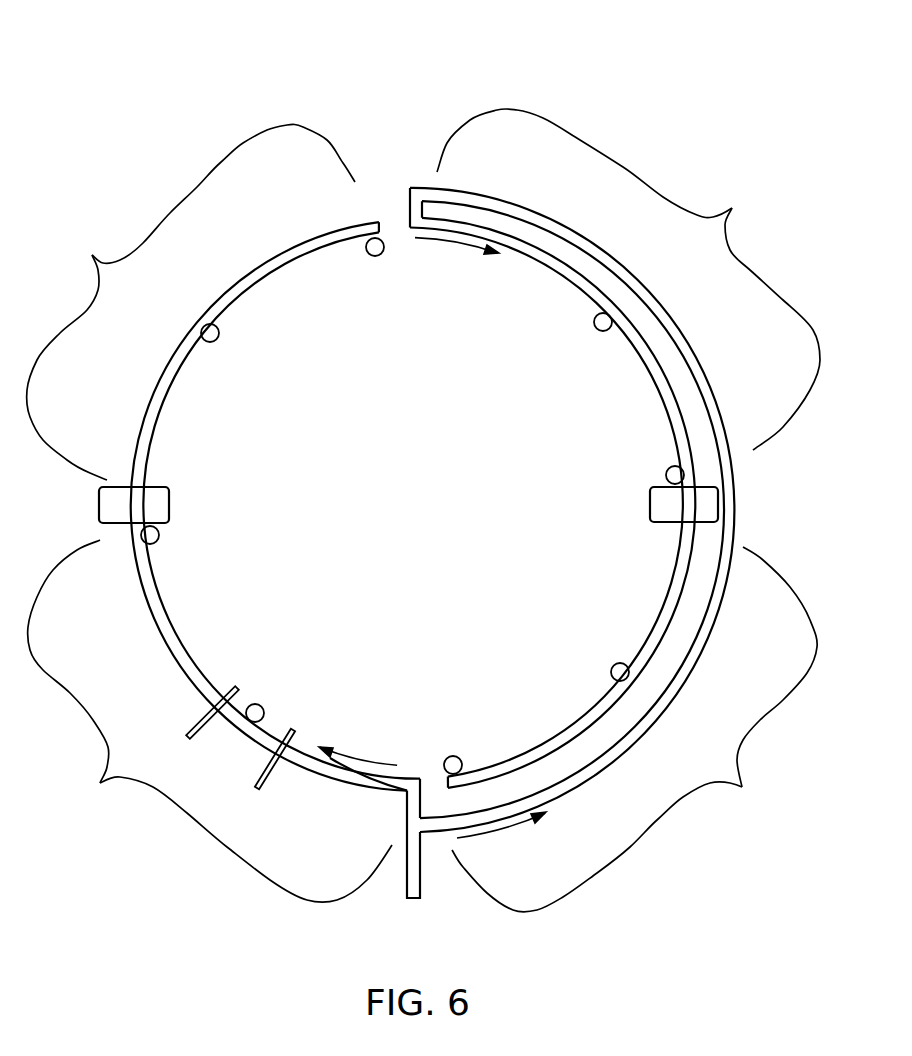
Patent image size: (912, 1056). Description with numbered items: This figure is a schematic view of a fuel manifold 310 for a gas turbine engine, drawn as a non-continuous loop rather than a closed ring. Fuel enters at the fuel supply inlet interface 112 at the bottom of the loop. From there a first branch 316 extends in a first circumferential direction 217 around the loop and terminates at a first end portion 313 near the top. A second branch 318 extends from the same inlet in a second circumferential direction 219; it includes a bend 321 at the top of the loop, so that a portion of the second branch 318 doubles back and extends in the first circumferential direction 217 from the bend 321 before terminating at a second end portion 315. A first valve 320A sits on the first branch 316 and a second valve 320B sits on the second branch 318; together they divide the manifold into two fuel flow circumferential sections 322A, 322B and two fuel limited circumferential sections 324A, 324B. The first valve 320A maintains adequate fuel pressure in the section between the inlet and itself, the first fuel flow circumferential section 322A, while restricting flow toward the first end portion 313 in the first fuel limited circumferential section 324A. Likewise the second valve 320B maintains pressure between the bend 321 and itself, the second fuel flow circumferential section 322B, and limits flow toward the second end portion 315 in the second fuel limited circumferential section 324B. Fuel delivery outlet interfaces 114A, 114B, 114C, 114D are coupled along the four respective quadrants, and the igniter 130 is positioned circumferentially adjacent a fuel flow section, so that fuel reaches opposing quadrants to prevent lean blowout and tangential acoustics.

The fuel manifold 310 is at (116, 108).
The first end portion 313 is at (377, 221).
The first branch 316 is at (377, 790).
The fuel supply inlet interface 112 is at (414, 863).
The bend 321 is at (401, 205).
The second branch 318 is at (573, 237).
The second end portion 315 is at (447, 784).
The first circumferential direction 217 is at (483, 249).
The second circumferential direction 219 is at (515, 826).
The first valve 320A is at (125, 508).
The second valve 320B is at (663, 512).
The first fuel delivery outlet interface 114A is at (166, 538).
The second fuel delivery outlet interface 114B is at (376, 257).
The third fuel delivery outlet interface 114C is at (589, 330).
The fourth fuel delivery outlet interface 114D is at (604, 667).
The igniter 130 is at (210, 730).
The first fuel flow circumferential section 322A is at (210, 721).
The second fuel flow circumferential section 322B is at (628, 279).
The first fuel limited circumferential section 324A is at (191, 302).
The second fuel limited circumferential section 324B is at (634, 729).